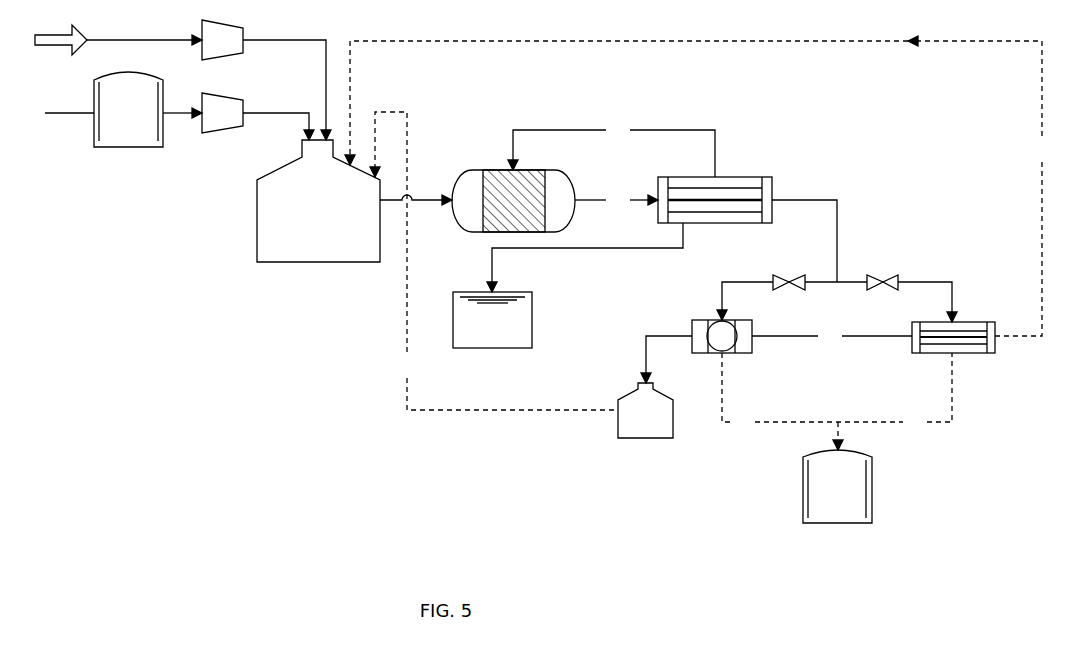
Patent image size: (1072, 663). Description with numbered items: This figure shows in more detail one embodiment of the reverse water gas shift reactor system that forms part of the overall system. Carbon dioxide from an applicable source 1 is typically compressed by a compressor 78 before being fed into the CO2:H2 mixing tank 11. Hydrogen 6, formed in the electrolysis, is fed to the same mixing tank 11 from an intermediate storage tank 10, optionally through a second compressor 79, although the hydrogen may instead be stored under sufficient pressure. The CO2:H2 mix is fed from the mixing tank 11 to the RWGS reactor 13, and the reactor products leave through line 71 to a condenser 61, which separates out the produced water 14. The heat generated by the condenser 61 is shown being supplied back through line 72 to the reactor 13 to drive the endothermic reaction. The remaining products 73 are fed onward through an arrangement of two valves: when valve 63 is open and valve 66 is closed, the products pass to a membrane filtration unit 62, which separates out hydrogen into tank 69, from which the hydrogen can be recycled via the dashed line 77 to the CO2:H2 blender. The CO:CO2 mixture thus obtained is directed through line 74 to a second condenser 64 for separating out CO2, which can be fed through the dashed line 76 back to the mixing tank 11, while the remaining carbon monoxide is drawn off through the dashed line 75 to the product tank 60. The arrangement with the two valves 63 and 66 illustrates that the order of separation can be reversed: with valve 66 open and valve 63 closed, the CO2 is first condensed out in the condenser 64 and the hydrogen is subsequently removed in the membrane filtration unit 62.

The CO2 source 1 is at (118, 40).
The hydrogen 6 is at (64, 112).
The intermediate storage tank 10 is at (148, 109).
The compressor 78 is at (266, 80).
The compressor 79 is at (258, 116).
The mixing tank 11 is at (354, 201).
The RWGS reactor 13 is at (513, 201).
The recycle line to reactor 72 is at (611, 149).
The reactor product line 71 is at (616, 199).
The produced water 14 is at (568, 285).
The condenser 61 is at (715, 210).
The products 73 is at (804, 233).
The valve 63 is at (792, 290).
The valve 66 is at (912, 291).
The membrane filtration unit 62 is at (721, 345).
The line 74 is at (832, 335).
The condenser 64 is at (953, 346).
The line 76 is at (697, 186).
The recycle line 77 is at (494, 261).
The tank 69 is at (655, 387).
The drain line 75 is at (837, 401).
The storage tank 60 is at (837, 486).